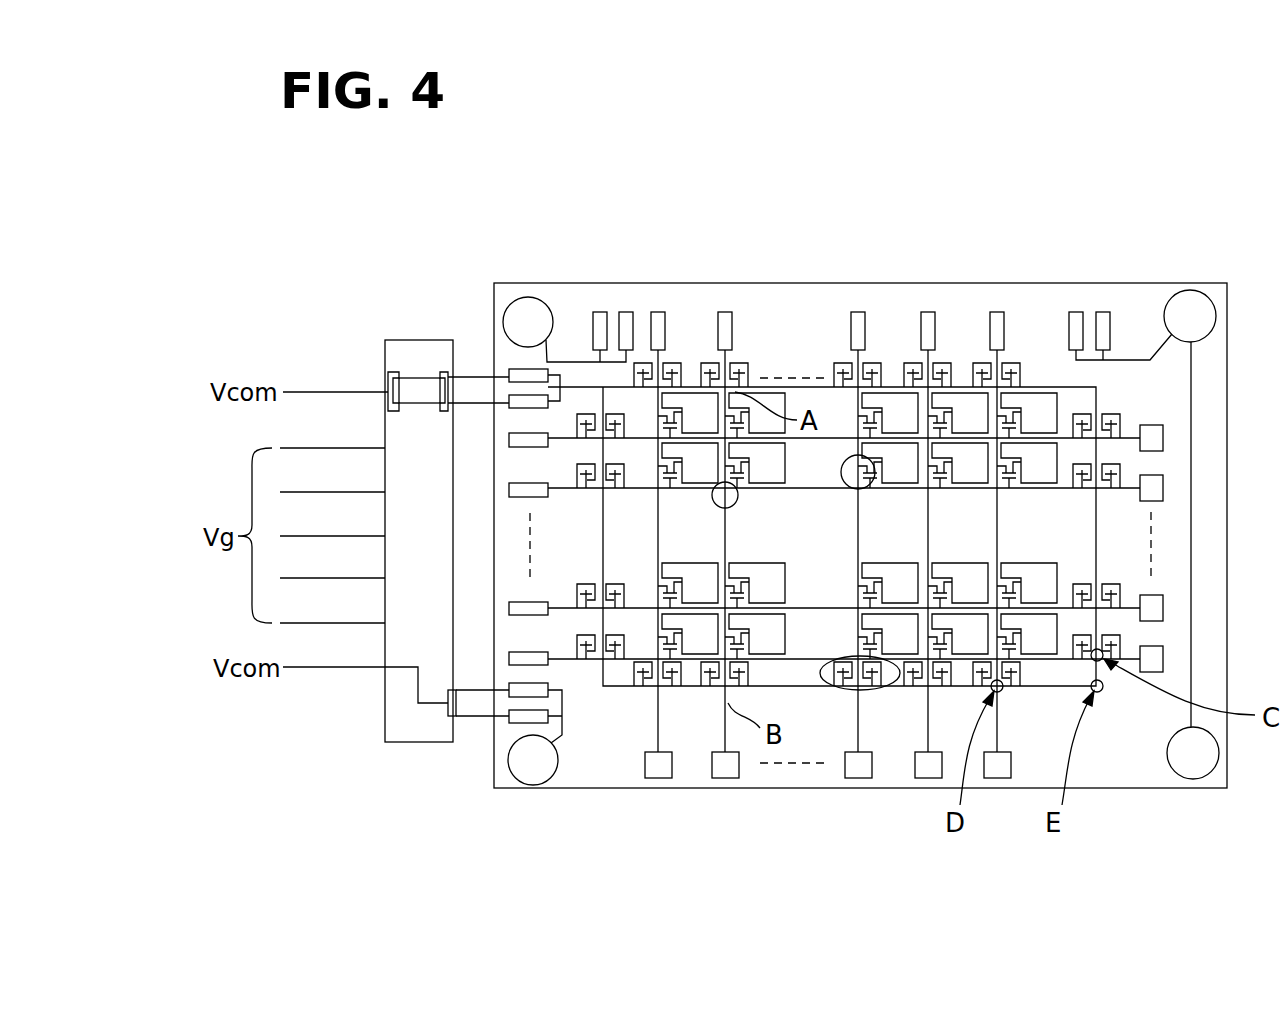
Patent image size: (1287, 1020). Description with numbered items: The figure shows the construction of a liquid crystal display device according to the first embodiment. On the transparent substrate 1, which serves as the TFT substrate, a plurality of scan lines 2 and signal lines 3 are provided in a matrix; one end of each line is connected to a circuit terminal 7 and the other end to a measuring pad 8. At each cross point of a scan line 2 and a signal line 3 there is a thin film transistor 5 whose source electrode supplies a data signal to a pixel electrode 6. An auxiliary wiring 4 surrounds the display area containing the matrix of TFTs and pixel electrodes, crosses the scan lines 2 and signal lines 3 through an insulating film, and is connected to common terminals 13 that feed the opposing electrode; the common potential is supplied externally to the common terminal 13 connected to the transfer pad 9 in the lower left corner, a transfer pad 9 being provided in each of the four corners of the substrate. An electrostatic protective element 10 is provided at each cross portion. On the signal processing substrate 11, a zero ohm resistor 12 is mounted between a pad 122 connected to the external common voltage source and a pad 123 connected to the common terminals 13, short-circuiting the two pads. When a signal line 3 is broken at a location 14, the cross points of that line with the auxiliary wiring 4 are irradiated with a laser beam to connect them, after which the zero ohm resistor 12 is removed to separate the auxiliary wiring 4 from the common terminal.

The transparent substrate 1 is at (1227, 372).
The scan line 2 is at (965, 490).
The signal line 3 is at (1000, 520).
The auxiliary wiring 4 is at (822, 385).
The thin film transistor 5 is at (875, 492).
The pixel electrode 6 is at (1035, 400).
The circuit terminal 7 is at (996, 310).
The measuring pad 8 is at (1163, 437).
The transfer pad 9 is at (537, 297).
The electrostatic protective element 10 is at (870, 690).
The signal processing substrate 11 is at (405, 735).
The zero ohm resistor 12 is at (413, 388).
The common terminal 13 is at (560, 370).
The broken location 14 is at (733, 502).
The pad 122 is at (388, 378).
The pad 123 is at (446, 375).